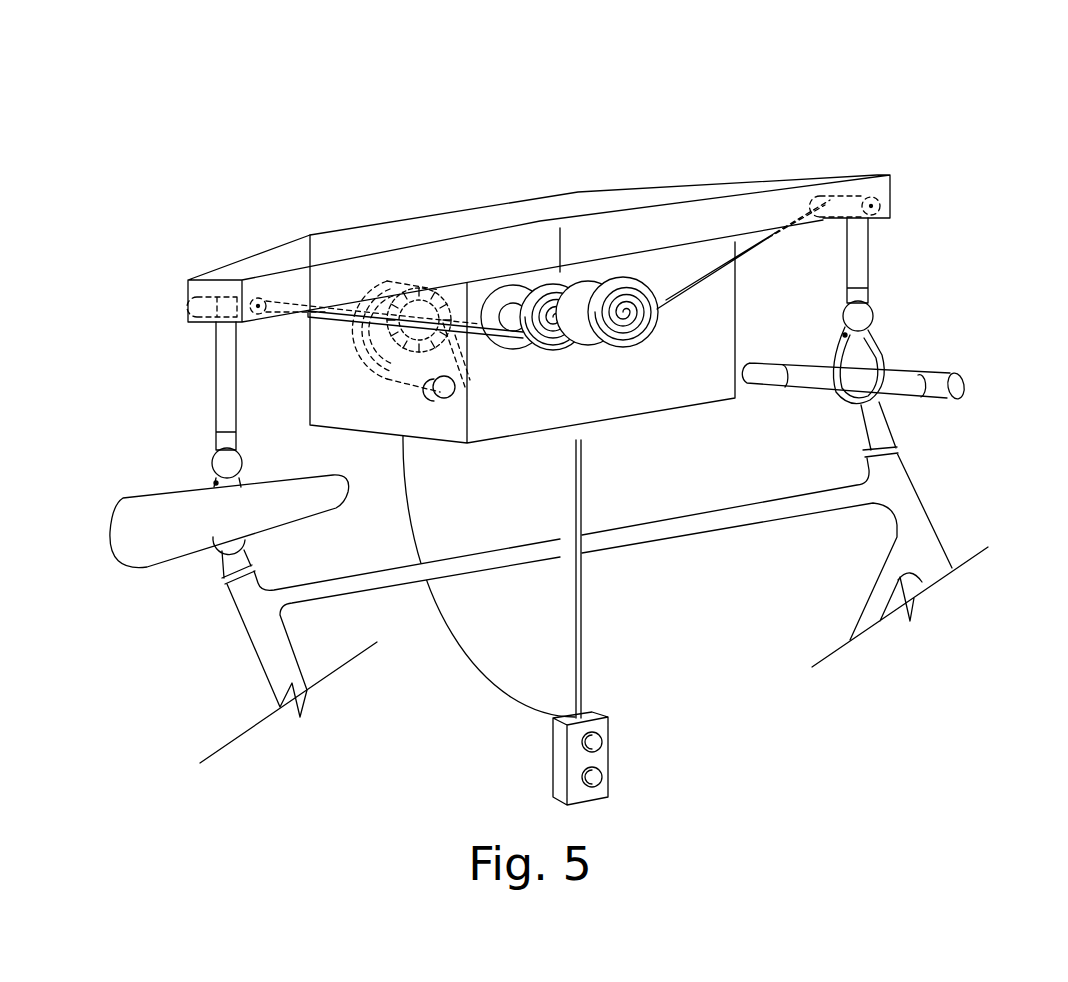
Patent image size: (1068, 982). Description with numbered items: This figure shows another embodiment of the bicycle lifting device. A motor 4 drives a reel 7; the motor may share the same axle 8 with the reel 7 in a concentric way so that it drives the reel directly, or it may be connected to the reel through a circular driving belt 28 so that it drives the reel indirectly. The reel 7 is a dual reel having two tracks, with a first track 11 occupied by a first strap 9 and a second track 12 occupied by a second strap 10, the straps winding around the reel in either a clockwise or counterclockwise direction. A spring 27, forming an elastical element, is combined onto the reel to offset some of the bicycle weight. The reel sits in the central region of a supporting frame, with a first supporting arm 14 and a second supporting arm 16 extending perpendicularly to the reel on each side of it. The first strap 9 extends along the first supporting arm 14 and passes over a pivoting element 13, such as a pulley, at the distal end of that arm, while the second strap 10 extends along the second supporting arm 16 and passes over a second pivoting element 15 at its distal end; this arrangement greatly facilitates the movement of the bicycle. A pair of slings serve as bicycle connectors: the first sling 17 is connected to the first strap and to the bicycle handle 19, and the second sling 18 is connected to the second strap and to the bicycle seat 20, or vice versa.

The motor 4 is at (447, 398).
The reel 7 is at (640, 290).
The axle 8 is at (467, 323).
The first strap 9 is at (857, 260).
The second strap 10 is at (230, 387).
The first track 11 is at (612, 300).
The second track 12 is at (513, 305).
The pivoting element 13 is at (882, 203).
The supporting arm 14 is at (757, 218).
The second pivoting element 15 is at (203, 300).
The second supporting arm 16 is at (343, 284).
The first sling 17 is at (883, 348).
The second sling 18 is at (212, 486).
The bicycle handle 19 is at (913, 387).
The bicycle seat 20 is at (160, 532).
The spring 27 is at (575, 272).
The circular driving belt 28 is at (413, 373).